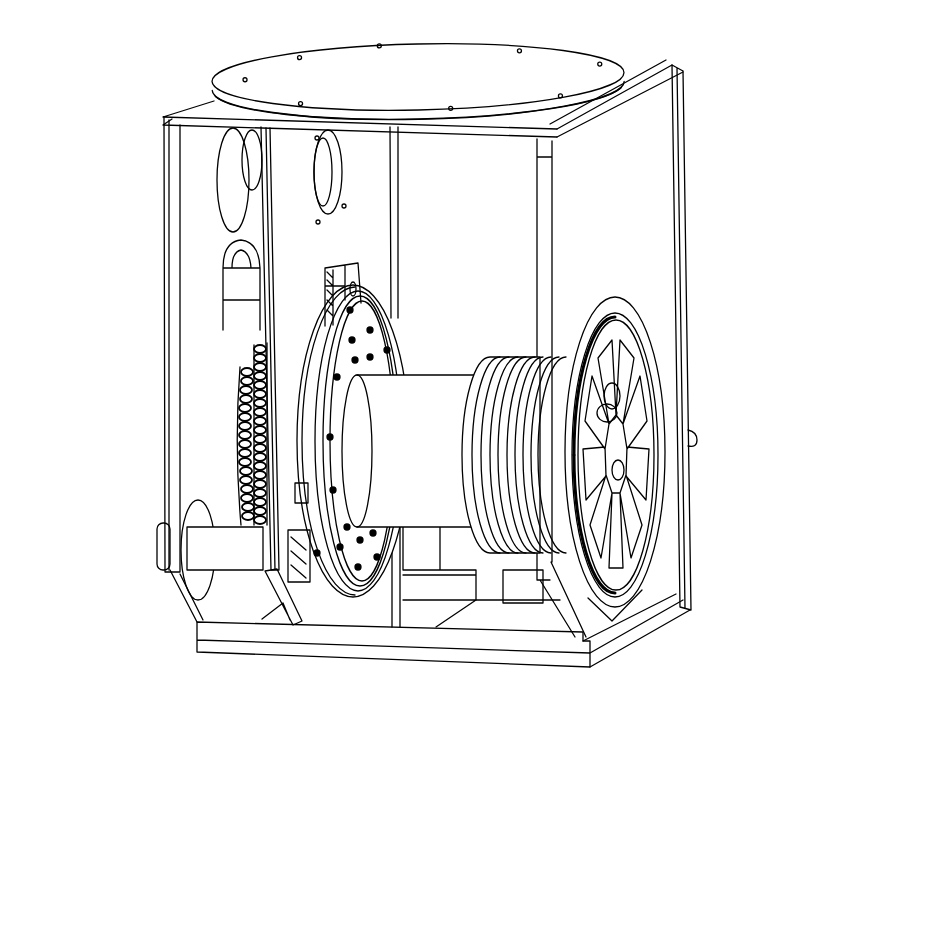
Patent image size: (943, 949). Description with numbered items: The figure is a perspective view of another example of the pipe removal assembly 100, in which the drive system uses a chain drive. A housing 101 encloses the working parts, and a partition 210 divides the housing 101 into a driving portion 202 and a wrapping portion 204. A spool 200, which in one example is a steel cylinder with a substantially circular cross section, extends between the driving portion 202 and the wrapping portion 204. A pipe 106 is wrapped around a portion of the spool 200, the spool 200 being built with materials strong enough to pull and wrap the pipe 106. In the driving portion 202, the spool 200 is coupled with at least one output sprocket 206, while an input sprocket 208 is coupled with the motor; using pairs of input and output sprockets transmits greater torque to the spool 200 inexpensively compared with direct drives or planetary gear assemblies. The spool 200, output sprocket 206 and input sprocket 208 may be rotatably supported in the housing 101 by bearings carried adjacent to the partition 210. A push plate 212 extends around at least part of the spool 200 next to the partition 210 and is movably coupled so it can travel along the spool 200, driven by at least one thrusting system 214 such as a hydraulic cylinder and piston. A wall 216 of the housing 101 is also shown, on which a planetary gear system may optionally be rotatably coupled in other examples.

The pipe removal assembly 100 is at (751, 32).
The housing 101 is at (662, 97).
The pipe 106 is at (507, 547).
The spool 200 is at (425, 515).
The driving portion 202 is at (202, 380).
The wrapping portion 204 is at (512, 207).
The output sprocket 206 is at (233, 442).
The input sprocket 208 is at (323, 167).
The partition 210 is at (293, 607).
The push plate 212 is at (353, 580).
The thrusting system 214 is at (233, 277).
The wall 216 is at (167, 310).